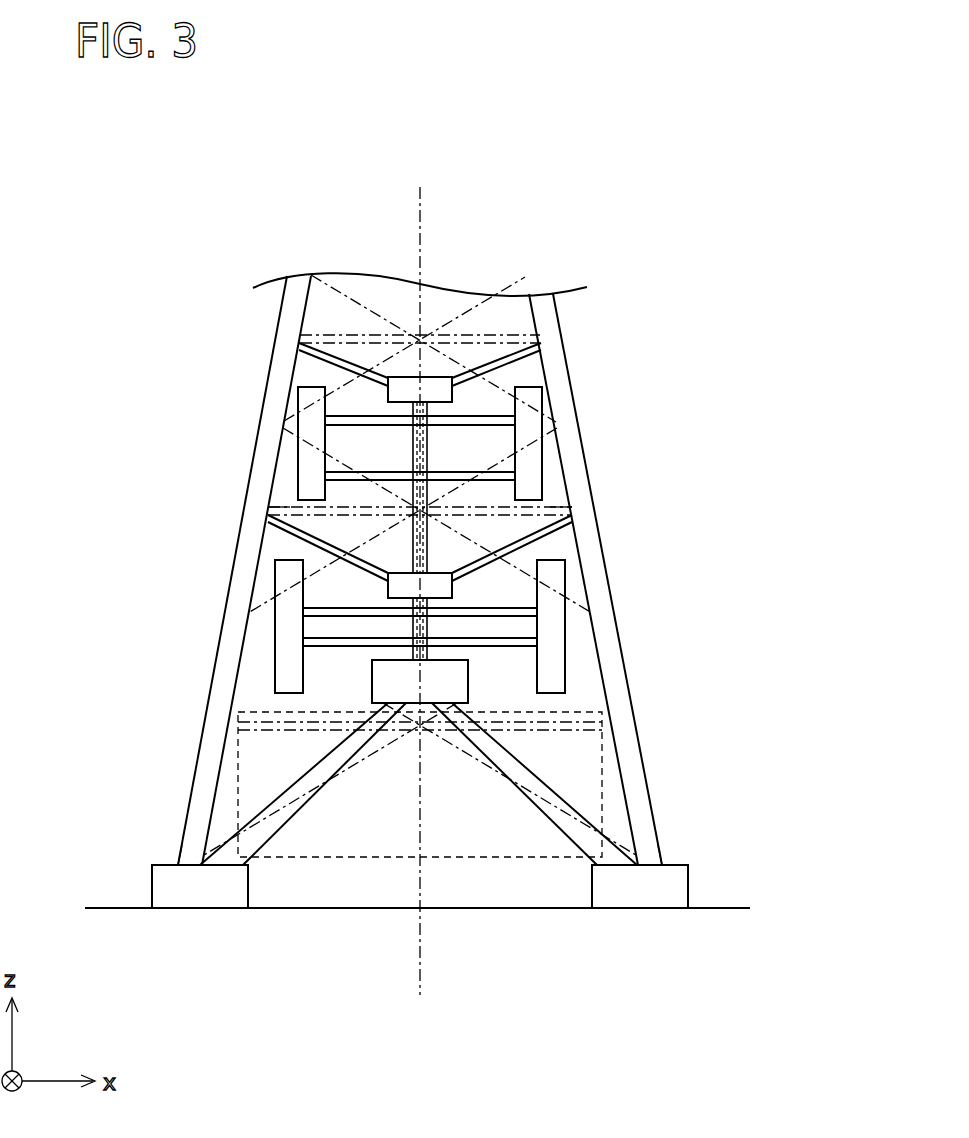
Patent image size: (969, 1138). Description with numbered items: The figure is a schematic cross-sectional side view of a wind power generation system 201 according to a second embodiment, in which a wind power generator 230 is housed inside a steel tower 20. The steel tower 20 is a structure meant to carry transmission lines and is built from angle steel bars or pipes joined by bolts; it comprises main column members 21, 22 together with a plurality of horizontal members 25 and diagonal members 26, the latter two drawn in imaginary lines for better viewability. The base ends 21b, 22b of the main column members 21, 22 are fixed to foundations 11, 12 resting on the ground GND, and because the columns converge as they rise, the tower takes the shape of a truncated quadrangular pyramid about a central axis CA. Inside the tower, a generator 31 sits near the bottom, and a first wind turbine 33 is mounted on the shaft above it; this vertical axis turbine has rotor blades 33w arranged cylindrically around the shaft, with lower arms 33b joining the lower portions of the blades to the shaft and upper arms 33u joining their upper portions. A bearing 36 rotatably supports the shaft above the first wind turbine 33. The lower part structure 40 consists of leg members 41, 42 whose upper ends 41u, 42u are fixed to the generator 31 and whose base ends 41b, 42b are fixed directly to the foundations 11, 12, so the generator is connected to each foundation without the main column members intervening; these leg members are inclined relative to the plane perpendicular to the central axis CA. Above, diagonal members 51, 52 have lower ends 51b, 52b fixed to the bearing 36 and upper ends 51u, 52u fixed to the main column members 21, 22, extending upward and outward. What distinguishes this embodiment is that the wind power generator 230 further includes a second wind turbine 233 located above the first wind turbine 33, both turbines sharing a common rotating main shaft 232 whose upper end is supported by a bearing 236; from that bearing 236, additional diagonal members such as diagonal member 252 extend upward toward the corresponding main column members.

The foundation 11 is at (178, 912).
The foundation 12 is at (664, 912).
The steel tower 20 is at (700, 275).
The wind power generation system 201 is at (803, 124).
The main column member 21 is at (296, 288).
The base end 21b is at (190, 878).
The main column member 22 is at (550, 300).
The base end 22b is at (665, 880).
The horizontal member 25 is at (300, 340).
The diagonal member 26 is at (305, 405).
The generator 31 is at (440, 682).
The first wind turbine 33 is at (585, 653).
The upper arm 33u is at (330, 612).
The lower arm 33b is at (330, 642).
The rotor blade 33w is at (290, 566).
The bearing 36 is at (440, 585).
The lower part structure 40 is at (455, 860).
The leg member 41 is at (332, 755).
The upper end 41u is at (385, 702).
The base end 41b is at (225, 870).
The leg member 42 is at (512, 775).
The upper end 42u is at (470, 700).
The base end 42b is at (640, 870).
The diagonal member 51 is at (272, 524).
The upper end 51u is at (270, 507).
The lower end 51b is at (275, 586).
The diagonal member 52 is at (575, 512).
The upper end 52u is at (570, 503).
The lower end 52b is at (555, 583).
The wind power generator 230 is at (755, 586).
The rotating main shaft 232 is at (545, 408).
The second wind turbine 233 is at (637, 427).
The bearing 236 is at (455, 392).
The diagonal member 252 is at (300, 348).
The central axis CA is at (420, 198).
The ground GND is at (745, 908).